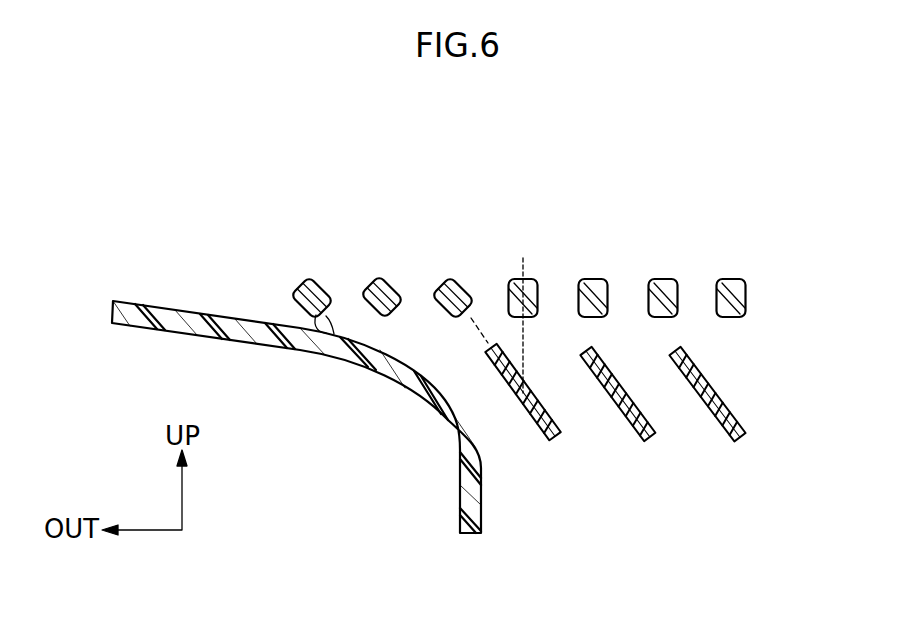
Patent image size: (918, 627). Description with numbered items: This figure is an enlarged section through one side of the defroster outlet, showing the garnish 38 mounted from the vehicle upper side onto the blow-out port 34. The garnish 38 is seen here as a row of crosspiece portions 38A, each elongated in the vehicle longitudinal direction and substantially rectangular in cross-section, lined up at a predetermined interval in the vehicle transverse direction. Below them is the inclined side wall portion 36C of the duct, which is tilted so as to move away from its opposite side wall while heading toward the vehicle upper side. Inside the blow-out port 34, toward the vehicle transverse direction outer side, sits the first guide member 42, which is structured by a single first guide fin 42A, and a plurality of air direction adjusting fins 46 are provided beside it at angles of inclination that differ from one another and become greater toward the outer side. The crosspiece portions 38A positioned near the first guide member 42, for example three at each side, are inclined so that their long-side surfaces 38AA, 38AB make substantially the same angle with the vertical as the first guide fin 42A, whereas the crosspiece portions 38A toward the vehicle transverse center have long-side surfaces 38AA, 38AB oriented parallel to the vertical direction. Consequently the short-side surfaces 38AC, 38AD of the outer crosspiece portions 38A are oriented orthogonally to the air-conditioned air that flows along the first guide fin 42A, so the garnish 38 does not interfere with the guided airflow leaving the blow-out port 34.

The blow-out port 34 is at (483, 470).
The side wall portion 36C is at (457, 517).
The garnish 38 is at (775, 207).
The crosspiece portion 38A is at (301, 280).
The long-side surface 38AA is at (327, 283).
The long-side surface 38AB is at (294, 303).
The short-side surface 38AC is at (305, 333).
The short-side surface 38AD is at (298, 284).
The first guide member 42 is at (554, 433).
The first guide fin 42A is at (546, 442).
The air direction adjusting fin 46 is at (744, 443).